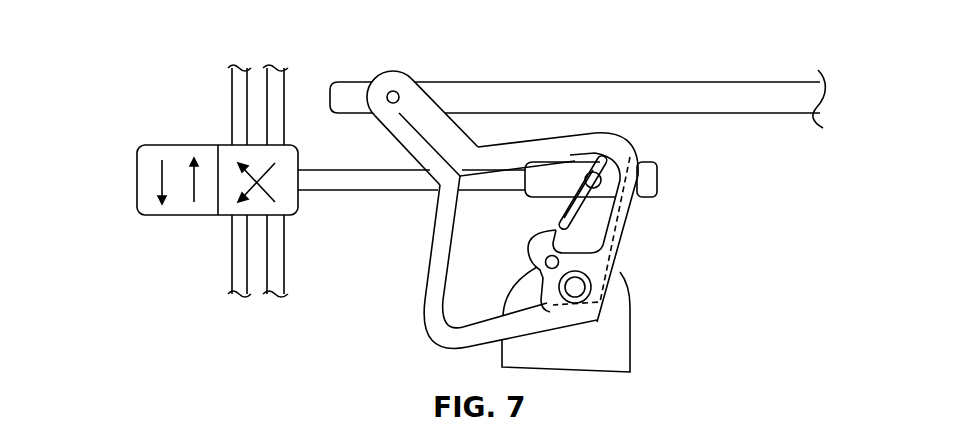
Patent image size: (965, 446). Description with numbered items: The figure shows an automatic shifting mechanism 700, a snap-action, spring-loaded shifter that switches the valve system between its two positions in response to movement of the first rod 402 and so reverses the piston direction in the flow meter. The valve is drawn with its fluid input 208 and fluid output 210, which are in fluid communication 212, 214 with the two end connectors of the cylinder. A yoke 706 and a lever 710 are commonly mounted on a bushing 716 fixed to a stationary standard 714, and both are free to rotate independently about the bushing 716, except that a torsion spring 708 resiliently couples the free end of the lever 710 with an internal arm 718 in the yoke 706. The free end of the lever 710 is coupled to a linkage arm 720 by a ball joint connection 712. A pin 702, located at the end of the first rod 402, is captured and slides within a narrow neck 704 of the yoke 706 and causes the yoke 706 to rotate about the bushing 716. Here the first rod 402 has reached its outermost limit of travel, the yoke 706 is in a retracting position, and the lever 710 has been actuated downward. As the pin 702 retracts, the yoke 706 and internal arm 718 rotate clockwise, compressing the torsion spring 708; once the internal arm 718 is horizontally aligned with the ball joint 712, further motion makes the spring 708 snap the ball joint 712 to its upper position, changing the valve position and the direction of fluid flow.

The automatic shifting mechanism 700 is at (108, 70).
The fluid communication 212 is at (232, 118).
The fluid communication 214 is at (287, 117).
The fluid output 210 is at (232, 258).
The fluid input 208 is at (287, 258).
The linkage arm 720 is at (377, 193).
The first rod 402 is at (698, 80).
The narrow neck 704 is at (403, 72).
The pin 702 is at (392, 90).
The yoke 706 is at (422, 308).
The ball joint connection 712 is at (603, 183).
The lever 710 is at (580, 155).
The torsion spring 708 is at (572, 160).
The internal arm 718 is at (528, 255).
The bushing 716 is at (593, 285).
The stationary standard 714 is at (633, 340).